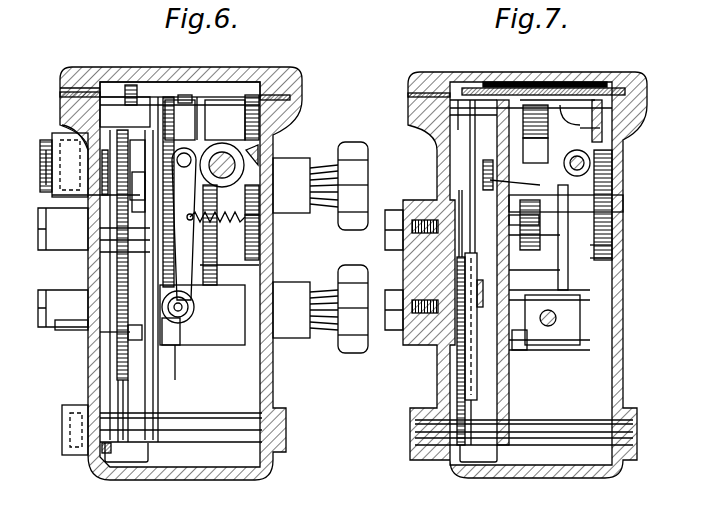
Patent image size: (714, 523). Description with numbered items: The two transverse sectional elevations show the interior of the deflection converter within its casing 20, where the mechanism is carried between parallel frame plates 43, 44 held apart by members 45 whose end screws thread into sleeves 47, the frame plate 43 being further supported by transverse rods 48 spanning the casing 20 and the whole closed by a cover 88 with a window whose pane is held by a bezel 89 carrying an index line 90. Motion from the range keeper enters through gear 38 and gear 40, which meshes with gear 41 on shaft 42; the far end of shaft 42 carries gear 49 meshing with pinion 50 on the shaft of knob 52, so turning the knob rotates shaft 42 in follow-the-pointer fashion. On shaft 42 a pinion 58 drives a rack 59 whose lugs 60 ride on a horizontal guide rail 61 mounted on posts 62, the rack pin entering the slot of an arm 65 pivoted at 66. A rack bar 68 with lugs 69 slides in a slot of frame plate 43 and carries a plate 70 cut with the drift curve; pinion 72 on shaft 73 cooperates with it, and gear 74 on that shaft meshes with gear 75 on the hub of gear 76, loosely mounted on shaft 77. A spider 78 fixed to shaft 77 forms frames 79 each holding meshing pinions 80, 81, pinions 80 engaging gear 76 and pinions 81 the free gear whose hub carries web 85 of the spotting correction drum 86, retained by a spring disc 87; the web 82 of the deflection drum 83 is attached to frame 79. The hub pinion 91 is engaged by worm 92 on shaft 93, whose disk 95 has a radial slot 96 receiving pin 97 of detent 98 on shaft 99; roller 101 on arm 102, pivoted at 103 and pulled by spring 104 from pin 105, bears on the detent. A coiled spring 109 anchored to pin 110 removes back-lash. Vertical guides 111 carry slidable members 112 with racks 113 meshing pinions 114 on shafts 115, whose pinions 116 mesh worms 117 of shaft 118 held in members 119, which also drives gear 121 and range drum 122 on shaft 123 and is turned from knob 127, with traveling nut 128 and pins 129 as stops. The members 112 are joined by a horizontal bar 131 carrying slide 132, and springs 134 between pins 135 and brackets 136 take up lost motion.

In FIG. 6, the casing 20 is at (275, 472).
In FIG. 7, the casing 20 is at (625, 378).
In FIG. 6, the gear 38 is at (45, 158).
In FIG. 6, the gear 40 is at (60, 195).
In FIG. 6, the gear 41 is at (84, 130).
In FIG. 6, the shaft 42 is at (145, 118).
In FIG. 6, the frame plate 43 is at (129, 392).
In FIG. 7, the frame plate 43 is at (508, 401).
In FIG. 6, the frame plate 44 is at (262, 380).
In FIG. 7, the frame plate 44 is at (600, 350).
In FIG. 6, the member 45 is at (228, 112).
In FIG. 7, the member 45 is at (578, 115).
In FIG. 6, the sleeve 47 is at (112, 110).
In FIG. 7, the sleeve 47 is at (457, 112).
In FIG. 6, the transverse rod 48 is at (222, 436).
In FIG. 7, the transverse rod 48 is at (590, 440).
In FIG. 6, the gear 49 is at (296, 100).
In FIG. 6, the pinion 50 is at (259, 190).
In FIG. 6, the knob 52 is at (355, 168).
In FIG. 6, the pinion 58 is at (133, 125).
In FIG. 6, the rack 59 is at (100, 122).
In FIG. 6, the lug 60 is at (97, 95).
In FIG. 6, the horizontal guide rail 61 is at (46, 170).
In FIG. 7, the horizontal guide rail 61 is at (484, 165).
In FIG. 6, the post 62 is at (70, 165).
In FIG. 6, the arm 65 is at (100, 232).
In FIG. 6, the pivot 66 is at (103, 420).
In FIG. 6, the rack bar 68 is at (135, 275).
In FIG. 6, the lug 69 is at (140, 250).
In FIG. 7, the lug 69 is at (512, 270).
In FIG. 6, the plate 70 is at (130, 240).
In FIG. 6, the pinion 72 is at (125, 292).
In FIG. 6, the shaft 73 is at (145, 380).
In FIG. 6, the gear 74 is at (63, 229).
In FIG. 7, the gear 74 is at (411, 270).
In FIG. 6, the gear 75 is at (180, 120).
In FIG. 7, the gear 75 is at (515, 243).
In FIG. 7, the gear 76 is at (520, 255).
In FIG. 7, the shaft 77 is at (600, 203).
In FIG. 7, the spider 78 is at (540, 182).
In FIG. 7, the frame 79 is at (536, 144).
In FIG. 7, the pinion 80 is at (532, 248).
In FIG. 7, the pinion 81 is at (536, 121).
In FIG. 7, the web 82 is at (510, 92).
In FIG. 7, the drum 83 is at (530, 98).
In FIG. 7, the web 85 is at (600, 120).
In FIG. 7, the spotting correction drum 86 is at (565, 110).
In FIG. 7, the spring disc 87 is at (598, 128).
In FIG. 6, the cover 88 is at (284, 74).
In FIG. 7, the cover 88 is at (632, 74).
In FIG. 7, the bezel 89 is at (605, 88).
In FIG. 7, the index line 90 is at (545, 110).
In FIG. 7, the pinion 91 is at (570, 215).
In FIG. 7, the worm 92 is at (612, 138).
In FIG. 7, the shaft 93 is at (590, 160).
In FIG. 6, the disk 95 is at (236, 153).
In FIG. 6, the radial slot 96 is at (259, 165).
In FIG. 6, the pin 97 is at (258, 152).
In FIG. 6, the detent 98 is at (225, 120).
In FIG. 6, the shaft 99 is at (250, 112).
In FIG. 6, the roller 101 is at (197, 130).
In FIG. 6, the arm 102 is at (173, 222).
In FIG. 6, the pivot 103 is at (174, 243).
In FIG. 6, the spring 104 is at (240, 222).
In FIG. 6, the pin 105 is at (248, 205).
In FIG. 7, the coiled spring 109 is at (605, 247).
In FIG. 7, the pin 110 is at (600, 257).
In FIG. 6, the vertical guide 111 is at (130, 400).
In FIG. 7, the vertical guide 111 is at (476, 401).
In FIG. 7, the slidable member 112 is at (478, 372).
In FIG. 6, the rack 113 is at (117, 372).
In FIG. 6, the pinion 114 is at (128, 335).
In FIG. 6, the shaft 115 is at (170, 345).
In FIG. 7, the shaft 115 is at (578, 345).
In FIG. 6, the pinion 116 is at (182, 318).
In FIG. 7, the pinion 116 is at (525, 345).
In FIG. 6, the worm 117 is at (190, 315).
In FIG. 6, the shaft 118 is at (190, 350).
In FIG. 7, the shaft 118 is at (548, 330).
In FIG. 6, the member 119 is at (248, 245).
In FIG. 7, the member 119 is at (570, 321).
In FIG. 6, the gear 121 is at (183, 100).
In FIG. 6, the drum 122 is at (244, 268).
In FIG. 6, the shaft 123 is at (259, 215).
In FIG. 6, the knob 127 is at (356, 352).
In FIG. 7, the traveling nut 128 is at (545, 303).
In FIG. 7, the pin 129 is at (580, 293).
In FIG. 6, the horizontal bar 131 is at (118, 328).
In FIG. 7, the horizontal bar 131 is at (480, 295).
In FIG. 6, the slide 132 is at (128, 318).
In FIG. 6, the spring 134 is at (106, 452).
In FIG. 7, the spring 134 is at (458, 358).
In FIG. 7, the pin 135 is at (462, 255).
In FIG. 6, the bracket 136 is at (138, 462).
In FIG. 7, the bracket 136 is at (483, 463).